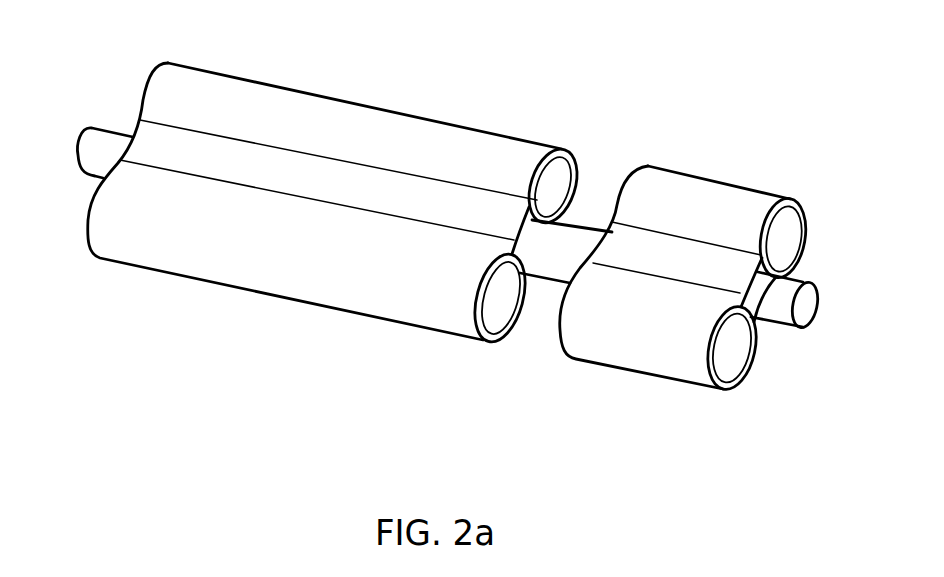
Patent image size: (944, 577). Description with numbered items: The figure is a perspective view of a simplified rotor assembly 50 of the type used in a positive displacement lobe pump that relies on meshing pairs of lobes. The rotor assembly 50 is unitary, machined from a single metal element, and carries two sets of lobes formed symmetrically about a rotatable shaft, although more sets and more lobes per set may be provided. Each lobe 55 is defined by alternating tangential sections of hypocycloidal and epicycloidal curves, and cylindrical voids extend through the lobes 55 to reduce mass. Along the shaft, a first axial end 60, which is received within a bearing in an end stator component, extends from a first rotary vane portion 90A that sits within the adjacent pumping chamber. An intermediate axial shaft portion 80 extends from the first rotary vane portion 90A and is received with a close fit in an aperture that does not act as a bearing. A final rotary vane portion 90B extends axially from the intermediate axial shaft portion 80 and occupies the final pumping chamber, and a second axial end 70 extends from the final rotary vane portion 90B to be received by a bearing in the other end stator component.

The rotor assembly 50 is at (832, 152).
The lobe 55 is at (305, 238).
The first axial end 60 is at (92, 147).
The second axial end 70 is at (807, 300).
The intermediate axial shaft portion 80 is at (563, 262).
The first rotary vane portion 90A is at (278, 350).
The final rotary vane portion 90B is at (705, 408).